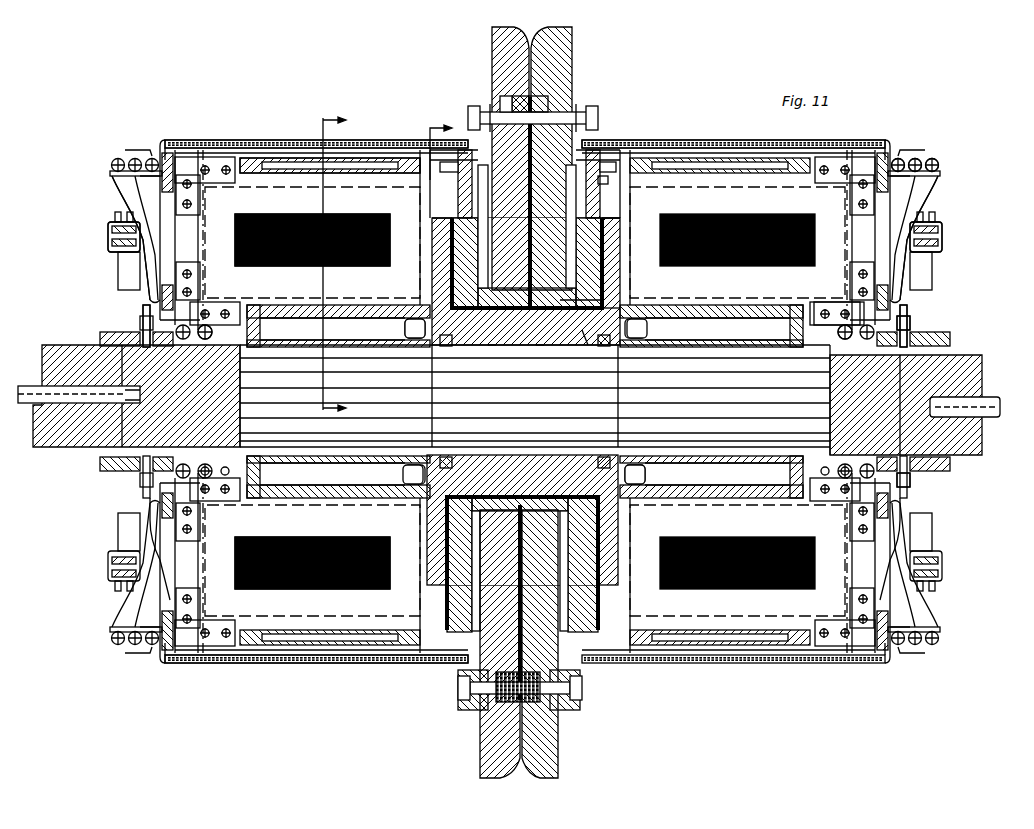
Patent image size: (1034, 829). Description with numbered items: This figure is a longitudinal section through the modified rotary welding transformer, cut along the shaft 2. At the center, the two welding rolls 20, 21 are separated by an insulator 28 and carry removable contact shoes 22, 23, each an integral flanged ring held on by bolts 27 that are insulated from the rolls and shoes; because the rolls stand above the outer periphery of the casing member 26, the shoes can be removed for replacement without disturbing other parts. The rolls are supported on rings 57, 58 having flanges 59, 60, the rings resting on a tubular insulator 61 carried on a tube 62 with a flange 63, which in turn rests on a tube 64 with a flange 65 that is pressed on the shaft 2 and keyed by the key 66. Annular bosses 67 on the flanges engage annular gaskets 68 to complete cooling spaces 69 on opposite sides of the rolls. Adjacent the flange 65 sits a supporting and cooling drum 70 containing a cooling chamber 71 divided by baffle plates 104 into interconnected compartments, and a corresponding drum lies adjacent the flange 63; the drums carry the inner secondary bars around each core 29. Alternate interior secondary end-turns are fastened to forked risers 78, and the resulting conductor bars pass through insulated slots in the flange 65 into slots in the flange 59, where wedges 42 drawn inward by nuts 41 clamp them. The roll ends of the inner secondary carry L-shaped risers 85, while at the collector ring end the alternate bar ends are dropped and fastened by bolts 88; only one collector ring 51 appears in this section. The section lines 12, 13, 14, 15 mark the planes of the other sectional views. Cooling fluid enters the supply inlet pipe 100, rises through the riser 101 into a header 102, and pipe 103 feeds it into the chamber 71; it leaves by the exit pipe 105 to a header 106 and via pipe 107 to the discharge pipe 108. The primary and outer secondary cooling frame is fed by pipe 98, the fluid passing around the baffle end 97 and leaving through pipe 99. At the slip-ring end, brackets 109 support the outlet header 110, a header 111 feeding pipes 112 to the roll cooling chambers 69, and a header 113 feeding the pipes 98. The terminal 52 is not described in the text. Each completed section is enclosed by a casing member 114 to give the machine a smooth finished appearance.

The shaft 2 is at (72, 450).
The section line for Figure 12 is at (343, 264).
The section line for Figure 13 is at (451, 150).
The section line for Figure 14 is at (608, 178).
The section line for Figure 15 is at (246, 392).
The roll 20 is at (505, 96).
The roll 21 is at (584, 150).
The shoe 22 is at (492, 46).
The shoe 23 is at (574, 50).
The casing member 26 is at (438, 612).
The bolts 27 is at (600, 112).
The insulator 28 is at (560, 90).
The core 29 is at (300, 245).
The nuts 41 is at (458, 165).
The wedges 42 is at (458, 200).
The collector ring 51 is at (110, 250).
The terminal 52 is at (935, 228).
The ring 57 is at (455, 290).
The ring 58 is at (600, 285).
The flange 59 is at (466, 258).
The flange 60 is at (586, 258).
The tubular insulator 61 is at (615, 302).
The tube 62 is at (585, 340).
The flange 63 is at (608, 236).
The tube 64 is at (492, 350).
The flange 65 is at (445, 236).
The key 66 is at (540, 352).
The annular bosses 67 is at (604, 158).
The annular gaskets 68 is at (575, 640).
The cooling spaces 69 is at (478, 640).
The supporting and cooling drum 70 is at (352, 350).
The cooling chamber 71 is at (325, 348).
The risers 78 is at (150, 215).
The L-shaped risers 85 is at (400, 580).
The bolts 88 is at (208, 480).
The baffle end 97 is at (400, 158).
The pipe 98 is at (214, 146).
The pipe 99 is at (148, 650).
The supply inlet pipe 100 is at (990, 404).
The riser 101 is at (915, 335).
The header 102 is at (145, 318).
The pipe 103 is at (822, 476).
The baffle plates 104 is at (648, 478).
The exit pipe 105 is at (830, 305).
The header 106 is at (212, 332).
The pipe 107 is at (905, 500).
The discharge pipe 108 is at (912, 482).
The brackets 109 is at (950, 190).
The outlet header 110 is at (942, 165).
The header 111 is at (920, 162).
The pipes 112 is at (670, 146).
The header 113 is at (905, 160).
The casing member 114 is at (290, 665).